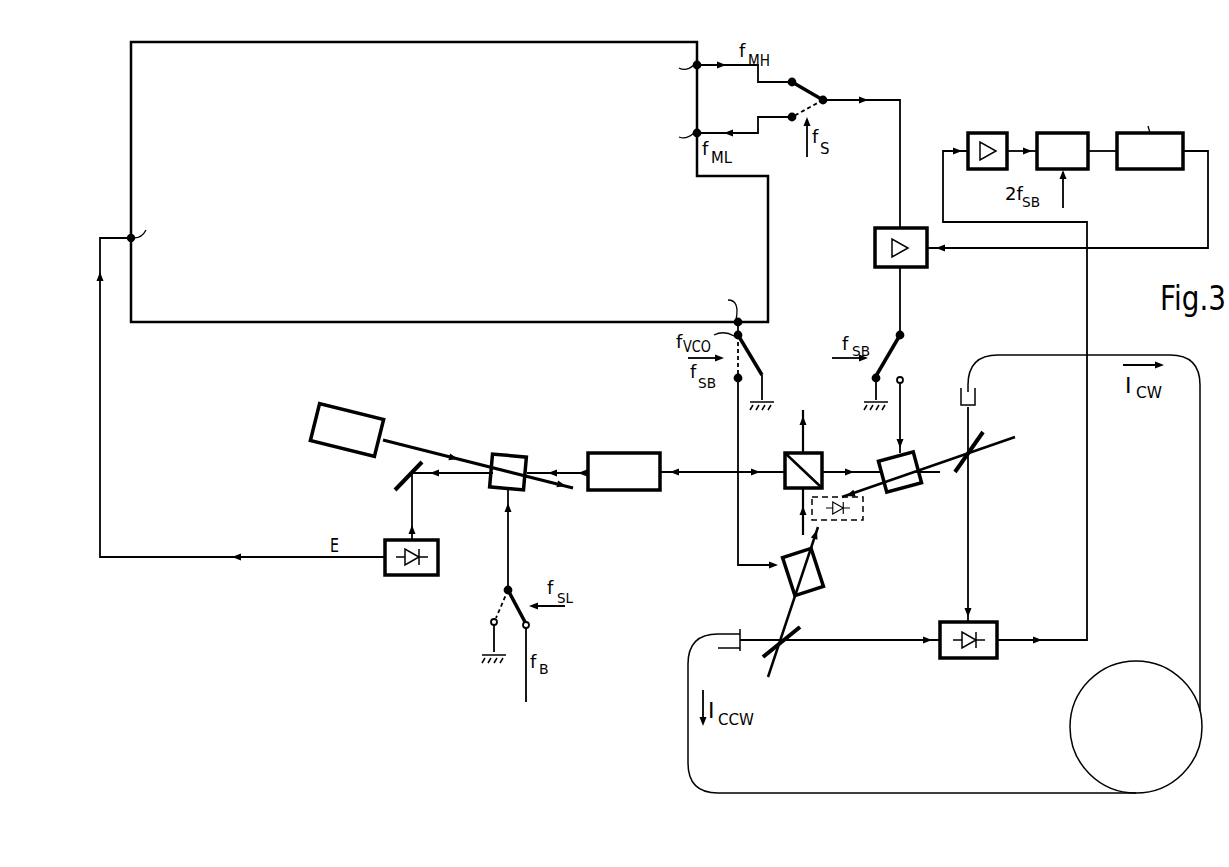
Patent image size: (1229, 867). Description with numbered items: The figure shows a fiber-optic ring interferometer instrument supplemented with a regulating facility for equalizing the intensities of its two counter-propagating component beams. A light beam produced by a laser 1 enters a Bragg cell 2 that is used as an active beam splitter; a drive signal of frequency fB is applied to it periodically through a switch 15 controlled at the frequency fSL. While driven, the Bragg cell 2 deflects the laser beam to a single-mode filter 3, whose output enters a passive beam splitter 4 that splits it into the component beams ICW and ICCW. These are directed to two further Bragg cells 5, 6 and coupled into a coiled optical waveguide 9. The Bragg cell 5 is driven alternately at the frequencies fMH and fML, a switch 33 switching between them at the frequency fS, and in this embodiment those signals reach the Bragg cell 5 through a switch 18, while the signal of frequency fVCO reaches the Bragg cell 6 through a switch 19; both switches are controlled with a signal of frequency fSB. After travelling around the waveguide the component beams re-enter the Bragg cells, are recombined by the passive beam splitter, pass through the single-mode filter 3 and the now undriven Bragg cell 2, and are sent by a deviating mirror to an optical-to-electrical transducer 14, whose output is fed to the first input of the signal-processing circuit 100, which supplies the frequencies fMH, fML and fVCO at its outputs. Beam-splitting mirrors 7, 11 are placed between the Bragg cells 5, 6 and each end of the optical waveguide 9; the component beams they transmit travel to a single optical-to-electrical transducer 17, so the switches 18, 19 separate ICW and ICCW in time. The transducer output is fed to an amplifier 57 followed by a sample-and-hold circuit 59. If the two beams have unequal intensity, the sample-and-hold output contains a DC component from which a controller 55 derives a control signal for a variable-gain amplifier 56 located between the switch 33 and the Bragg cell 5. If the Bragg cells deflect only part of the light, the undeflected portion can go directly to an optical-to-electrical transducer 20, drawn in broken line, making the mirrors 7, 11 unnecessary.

The laser 1 is at (336, 450).
The Bragg cell 2 is at (509, 453).
The single-mode filter 3 is at (621, 453).
The passive beam splitter 4 is at (787, 455).
The Bragg cell 5 is at (882, 458).
The Bragg cell 6 is at (821, 565).
The beam-splitting mirror 7 is at (984, 436).
The coiled optical waveguide 9 is at (1200, 441).
The beam-splitting mirror 11 is at (783, 647).
The optical-to-electrical transducer 14 is at (412, 576).
The switch 15 is at (499, 608).
The optical-to-electrical transducer 17 is at (970, 660).
The switch 18 is at (904, 358).
The switch 19 is at (757, 362).
The optical-to-electrical transducer 20 is at (863, 517).
The switch 33 is at (804, 96).
The controller 55 is at (1150, 170).
The variable-gain amplifier 56 is at (912, 268).
The amplifier 57 is at (988, 133).
The sample-and-hold circuit 59 is at (1063, 133).
The signal-processing circuit 100 is at (252, 323).